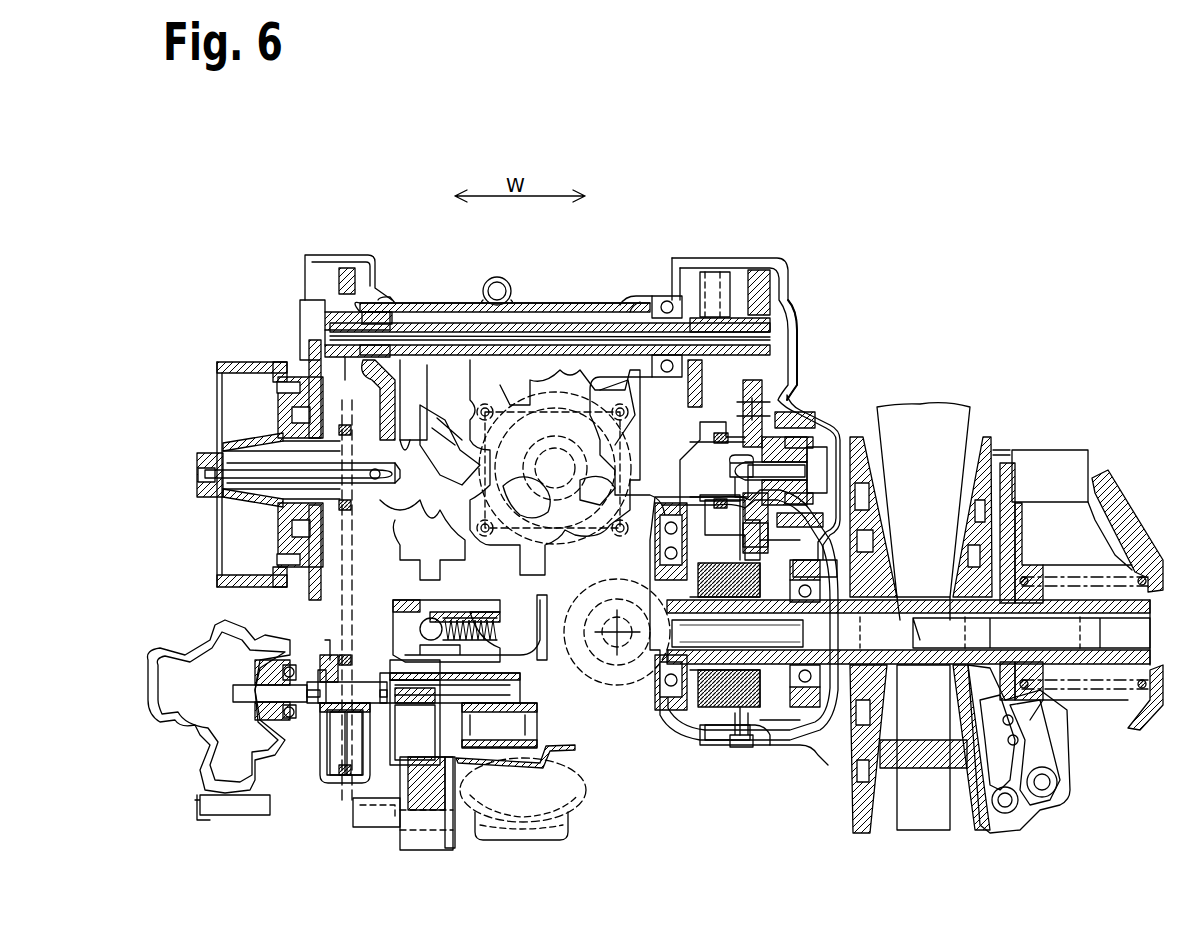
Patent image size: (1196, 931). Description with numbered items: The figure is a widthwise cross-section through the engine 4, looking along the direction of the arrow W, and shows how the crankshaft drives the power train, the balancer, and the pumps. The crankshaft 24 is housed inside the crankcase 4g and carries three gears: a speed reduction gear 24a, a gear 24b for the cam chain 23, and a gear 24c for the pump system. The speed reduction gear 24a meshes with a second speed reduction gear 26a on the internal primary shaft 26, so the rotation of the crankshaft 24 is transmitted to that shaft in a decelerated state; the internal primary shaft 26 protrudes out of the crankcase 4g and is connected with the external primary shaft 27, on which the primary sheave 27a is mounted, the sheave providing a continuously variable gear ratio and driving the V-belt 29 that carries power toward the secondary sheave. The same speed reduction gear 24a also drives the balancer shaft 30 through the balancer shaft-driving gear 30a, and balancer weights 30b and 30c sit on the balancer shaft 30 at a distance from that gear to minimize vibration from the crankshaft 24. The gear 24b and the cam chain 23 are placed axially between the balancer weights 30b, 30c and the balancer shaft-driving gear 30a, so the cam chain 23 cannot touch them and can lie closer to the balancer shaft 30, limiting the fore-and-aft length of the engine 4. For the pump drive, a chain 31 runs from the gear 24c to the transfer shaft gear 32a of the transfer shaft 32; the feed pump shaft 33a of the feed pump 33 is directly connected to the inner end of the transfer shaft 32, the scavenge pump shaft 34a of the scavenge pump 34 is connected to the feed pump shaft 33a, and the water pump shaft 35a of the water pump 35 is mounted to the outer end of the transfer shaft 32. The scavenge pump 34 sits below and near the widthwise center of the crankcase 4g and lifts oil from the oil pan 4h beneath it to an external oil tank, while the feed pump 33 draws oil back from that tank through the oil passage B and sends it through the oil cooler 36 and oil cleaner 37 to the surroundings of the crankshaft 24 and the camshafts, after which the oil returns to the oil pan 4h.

The engine 4 is at (845, 210).
The crankcase 4g is at (795, 770).
The oil pan 4h is at (590, 800).
The cam chain 23 is at (718, 430).
The crankshaft 24 is at (765, 410).
The speed reduction gear 24a is at (778, 418).
The gear for the cam chain 24b is at (755, 540).
The gear for the pump system 24c is at (348, 513).
The internal primary shaft 26 is at (675, 710).
The speed reduction gear 26a is at (735, 740).
The external primary shaft 27 is at (1063, 660).
The primary sheave 27a is at (985, 810).
The V-belt 29 is at (907, 720).
The balancer shaft 30 is at (732, 316).
The balancer shaft-driving gear 30a is at (798, 342).
The balancer weight 30b is at (712, 316).
The balancer weight 30c is at (348, 268).
The chain 31 is at (330, 610).
The transfer shaft 32 is at (320, 740).
The transfer shaft gear 32a is at (340, 770).
The feed pump 33 is at (395, 745).
The feed pump shaft 33a is at (405, 605).
The scavenge pump 34 is at (515, 732).
The scavenge pump shaft 34a is at (508, 688).
The water pump 35 is at (265, 740).
The water pump shaft 35a is at (258, 678).
The oil cooler 36 is at (543, 400).
The oil cleaner 37 is at (616, 640).
The oil passage B is at (378, 820).